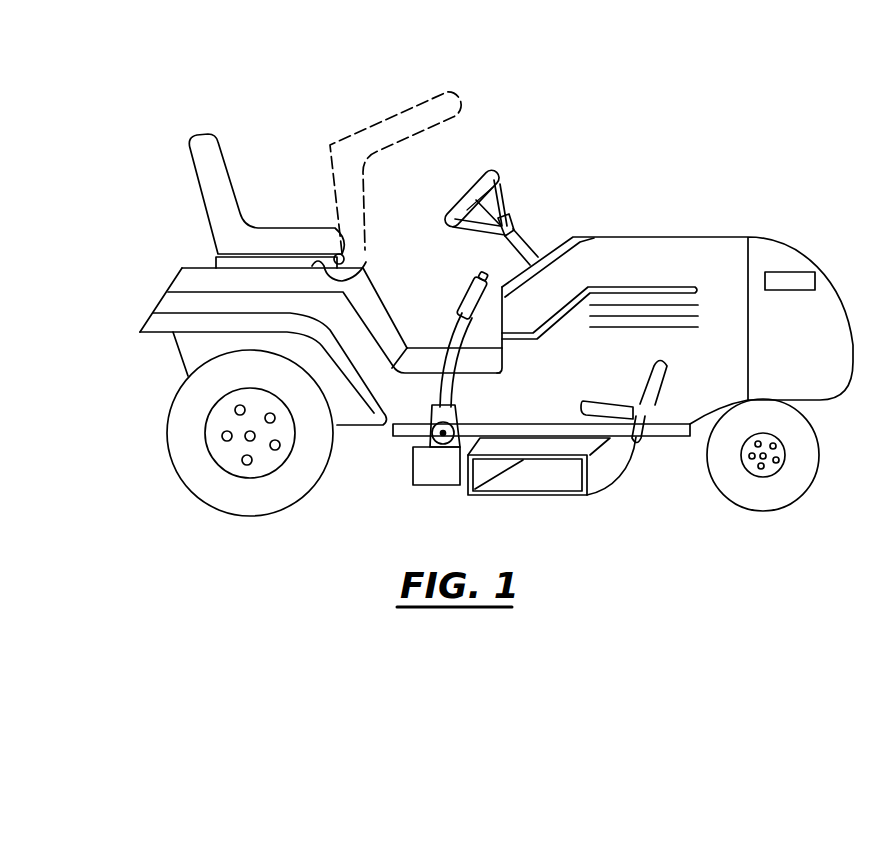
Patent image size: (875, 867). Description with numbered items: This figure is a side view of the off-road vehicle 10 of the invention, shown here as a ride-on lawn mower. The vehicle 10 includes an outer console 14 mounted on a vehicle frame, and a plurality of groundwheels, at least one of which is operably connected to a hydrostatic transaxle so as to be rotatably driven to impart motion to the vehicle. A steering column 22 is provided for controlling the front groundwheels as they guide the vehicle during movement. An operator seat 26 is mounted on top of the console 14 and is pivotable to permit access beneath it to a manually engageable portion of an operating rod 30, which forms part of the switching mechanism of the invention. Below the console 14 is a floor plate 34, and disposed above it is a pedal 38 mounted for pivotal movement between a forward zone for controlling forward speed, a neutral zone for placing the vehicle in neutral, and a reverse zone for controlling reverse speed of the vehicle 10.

The off-road vehicle 10 is at (707, 133).
The outer console 14 is at (613, 247).
The steering column 22 is at (502, 174).
The operator seat 26 is at (208, 168).
The operating rod 30 is at (366, 262).
The floor plate 34 is at (480, 417).
The pedal 38 is at (636, 437).